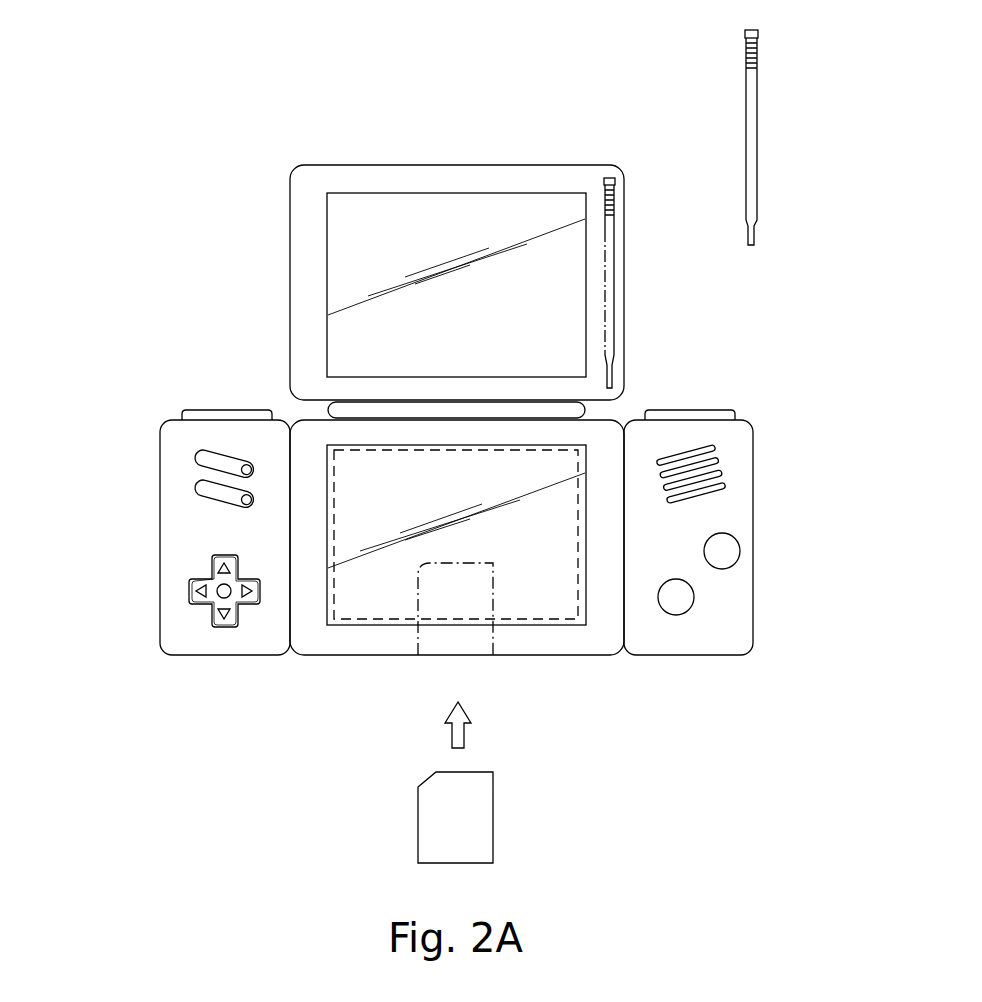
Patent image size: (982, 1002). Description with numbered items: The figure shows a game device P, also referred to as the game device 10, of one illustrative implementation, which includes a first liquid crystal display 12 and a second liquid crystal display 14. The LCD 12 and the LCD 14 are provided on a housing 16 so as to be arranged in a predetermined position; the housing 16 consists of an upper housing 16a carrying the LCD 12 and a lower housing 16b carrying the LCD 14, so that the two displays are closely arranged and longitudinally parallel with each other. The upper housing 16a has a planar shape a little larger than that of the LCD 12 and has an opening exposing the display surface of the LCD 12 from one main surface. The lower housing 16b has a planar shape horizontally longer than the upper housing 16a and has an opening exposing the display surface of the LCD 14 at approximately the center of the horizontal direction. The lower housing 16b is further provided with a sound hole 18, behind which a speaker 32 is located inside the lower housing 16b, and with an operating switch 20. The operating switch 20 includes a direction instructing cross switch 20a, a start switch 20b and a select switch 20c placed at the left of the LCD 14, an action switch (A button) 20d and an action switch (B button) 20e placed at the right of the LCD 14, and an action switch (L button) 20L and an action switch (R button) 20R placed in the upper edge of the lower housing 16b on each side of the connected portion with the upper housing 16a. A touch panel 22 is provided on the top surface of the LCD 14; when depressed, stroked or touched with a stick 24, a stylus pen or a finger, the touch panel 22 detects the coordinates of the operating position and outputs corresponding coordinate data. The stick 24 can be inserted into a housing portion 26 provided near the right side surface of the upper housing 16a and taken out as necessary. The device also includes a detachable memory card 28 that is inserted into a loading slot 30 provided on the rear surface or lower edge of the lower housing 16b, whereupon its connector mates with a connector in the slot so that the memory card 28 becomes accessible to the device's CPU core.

The game device P is at (262, 154).
The game device 10 is at (375, 52).
The first liquid crystal display 12 is at (347, 249).
The second liquid crystal display 14 is at (562, 626).
The housing 16 is at (622, 328).
The upper housing 16a is at (457, 282).
The lower housing 16b is at (457, 537).
The sound hole 18 is at (718, 470).
The speaker 32 is at (691, 474).
The operating switch 20 is at (183, 439).
The action switch (L button) 20L is at (228, 412).
The action switch (R button) 20R is at (705, 412).
The direction instructing switch (cross switch) 20a is at (190, 590).
The start switch 20b is at (200, 462).
The select switch 20c is at (222, 503).
The action switch (A button) 20d is at (740, 548).
The action switch (B button) 20e is at (695, 597).
The touch panel 22 is at (352, 592).
The stick 24 is at (758, 128).
The housing portion (housing slot) 26 is at (610, 236).
The memory card 28 is at (488, 808).
The loading slot 30 is at (459, 656).